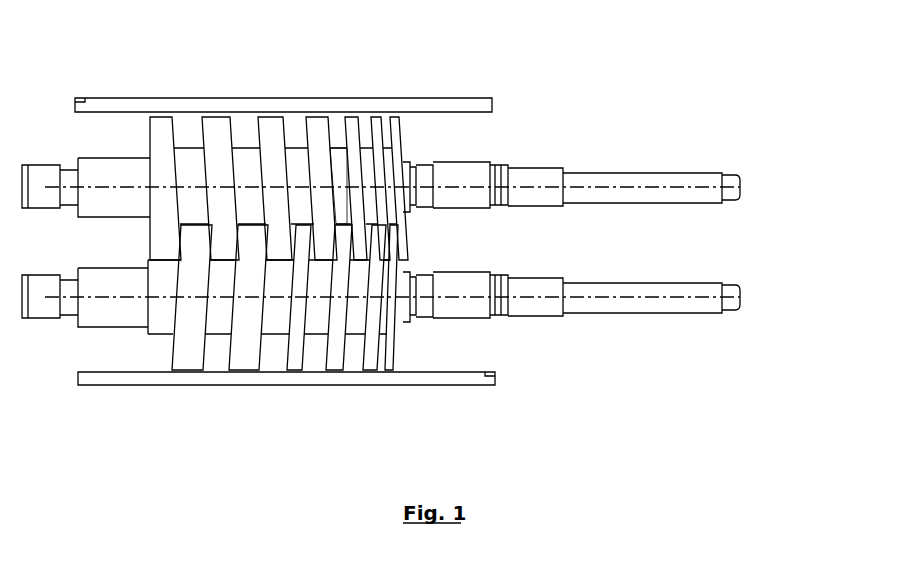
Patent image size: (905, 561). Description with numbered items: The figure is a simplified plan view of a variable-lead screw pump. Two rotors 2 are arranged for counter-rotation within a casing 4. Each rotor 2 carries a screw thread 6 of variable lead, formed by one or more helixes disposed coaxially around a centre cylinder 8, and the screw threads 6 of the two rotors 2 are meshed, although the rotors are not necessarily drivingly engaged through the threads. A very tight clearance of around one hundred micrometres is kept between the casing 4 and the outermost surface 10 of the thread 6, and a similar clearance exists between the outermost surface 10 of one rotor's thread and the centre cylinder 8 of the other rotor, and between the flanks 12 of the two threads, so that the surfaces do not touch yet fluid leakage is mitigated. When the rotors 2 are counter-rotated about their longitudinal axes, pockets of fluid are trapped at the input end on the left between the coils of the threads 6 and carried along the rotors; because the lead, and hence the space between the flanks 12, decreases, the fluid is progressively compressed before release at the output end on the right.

The rotors 2 is at (720, 302).
The casing 4 is at (495, 373).
The screw thread 6 is at (317, 125).
The centre cylinder 8 is at (333, 158).
The outermost surface 10 is at (267, 115).
The flanks 12 is at (203, 350).